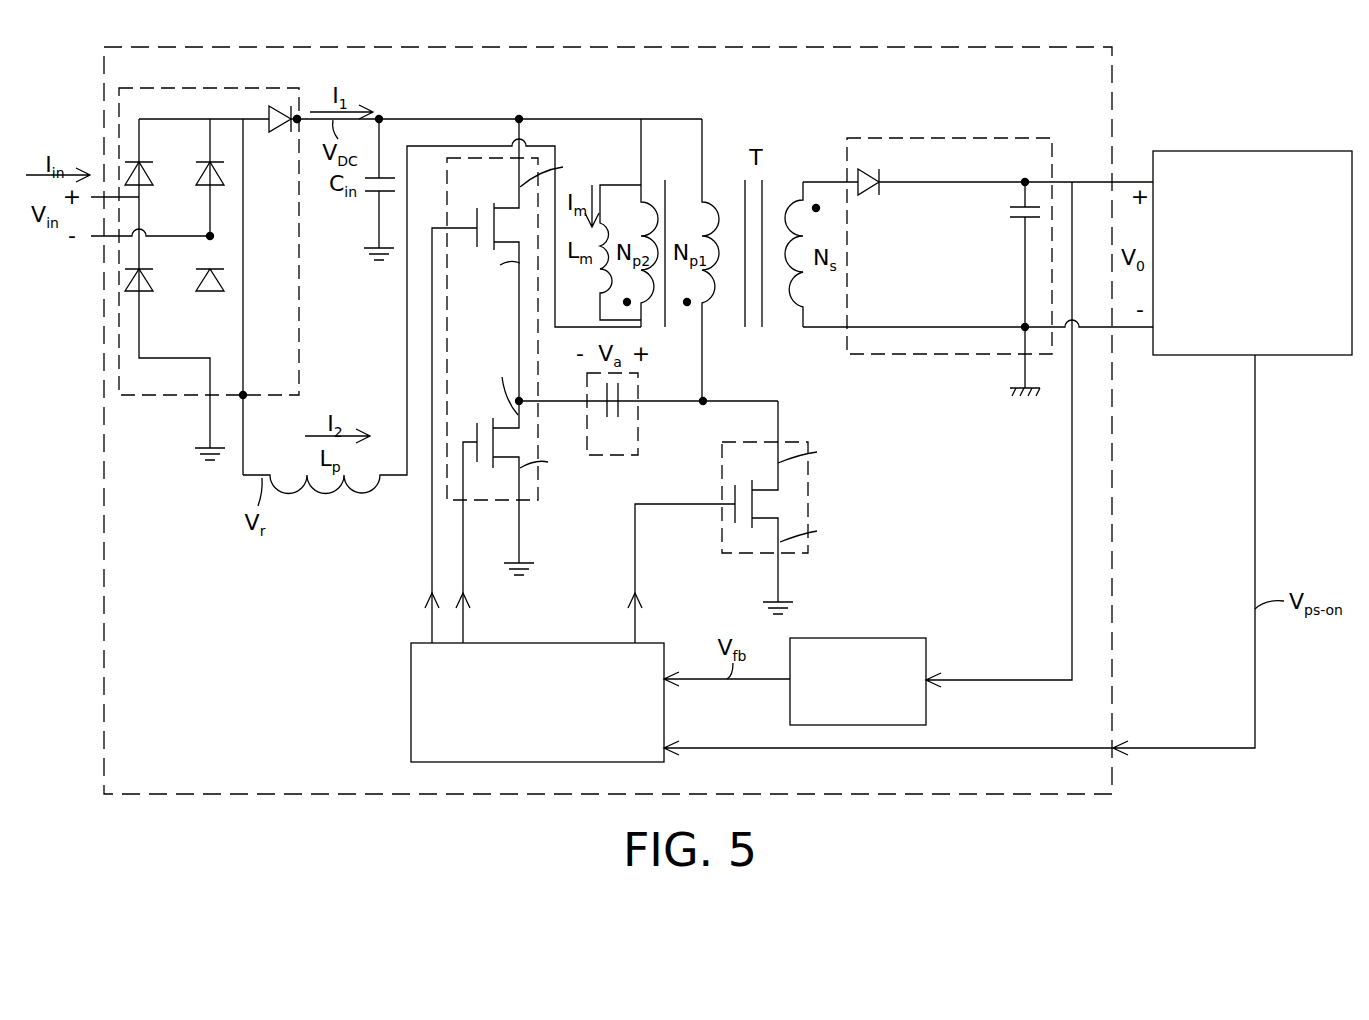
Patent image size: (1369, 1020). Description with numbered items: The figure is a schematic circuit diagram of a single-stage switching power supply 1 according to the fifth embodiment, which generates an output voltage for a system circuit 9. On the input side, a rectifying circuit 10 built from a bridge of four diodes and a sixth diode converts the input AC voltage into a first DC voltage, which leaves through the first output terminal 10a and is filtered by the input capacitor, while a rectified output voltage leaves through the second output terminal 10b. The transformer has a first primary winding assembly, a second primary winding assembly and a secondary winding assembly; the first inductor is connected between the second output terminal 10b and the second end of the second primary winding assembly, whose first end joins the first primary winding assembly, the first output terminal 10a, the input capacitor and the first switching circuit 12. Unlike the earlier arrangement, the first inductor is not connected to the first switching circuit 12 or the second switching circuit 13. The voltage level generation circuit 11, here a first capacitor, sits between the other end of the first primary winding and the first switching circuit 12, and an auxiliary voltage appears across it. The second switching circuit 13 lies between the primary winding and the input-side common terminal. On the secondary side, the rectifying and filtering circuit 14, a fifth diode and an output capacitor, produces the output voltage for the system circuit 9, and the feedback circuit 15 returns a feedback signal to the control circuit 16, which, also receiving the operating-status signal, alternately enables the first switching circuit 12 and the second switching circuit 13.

The single-stage switching power supply 1 is at (1099, 47).
The system circuit 9 is at (1252, 151).
The rectifying circuit 10 is at (155, 398).
The first output terminal 10a is at (298, 117).
The second output terminal 10b is at (245, 397).
The voltage level generation circuit 11 is at (638, 398).
The first switching circuit 12 is at (538, 498).
The second switching circuit 13 is at (722, 487).
The rectifying and filtering circuit 14 is at (983, 138).
The feedback circuit 15 is at (866, 638).
The control circuit 16 is at (410, 703).